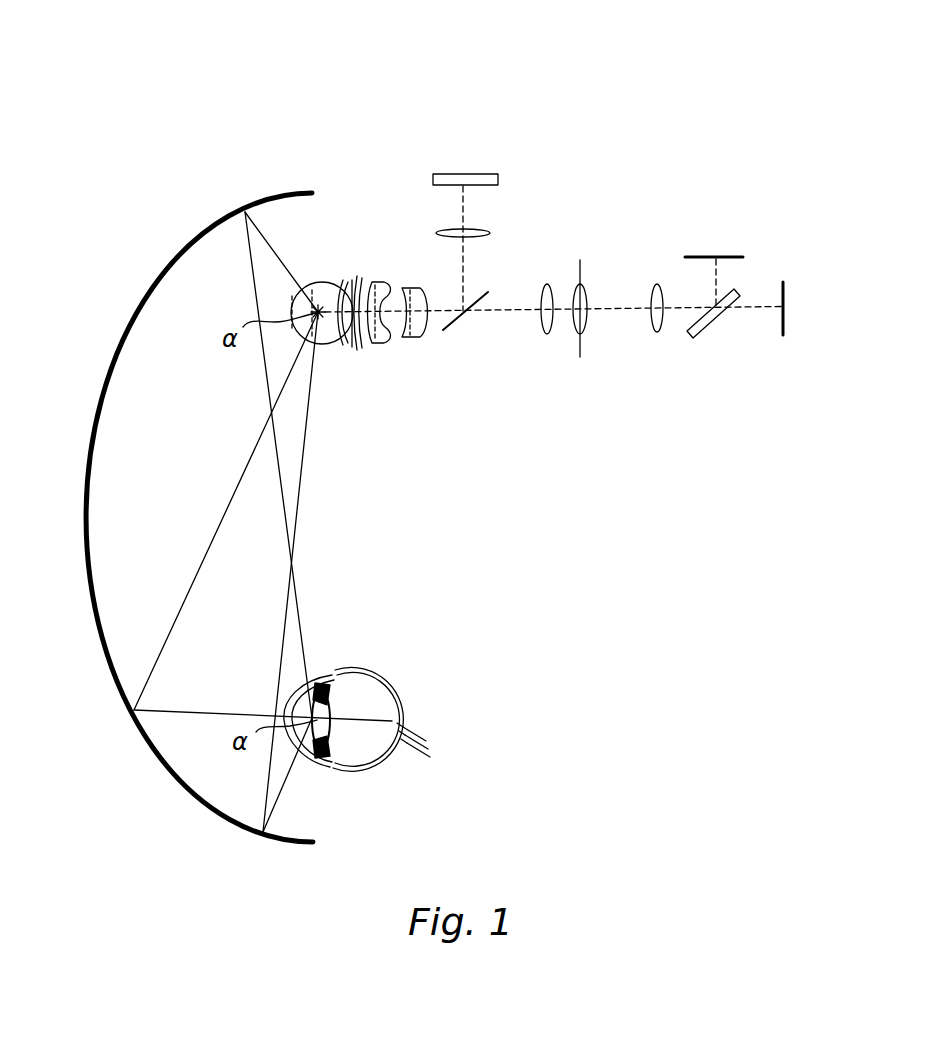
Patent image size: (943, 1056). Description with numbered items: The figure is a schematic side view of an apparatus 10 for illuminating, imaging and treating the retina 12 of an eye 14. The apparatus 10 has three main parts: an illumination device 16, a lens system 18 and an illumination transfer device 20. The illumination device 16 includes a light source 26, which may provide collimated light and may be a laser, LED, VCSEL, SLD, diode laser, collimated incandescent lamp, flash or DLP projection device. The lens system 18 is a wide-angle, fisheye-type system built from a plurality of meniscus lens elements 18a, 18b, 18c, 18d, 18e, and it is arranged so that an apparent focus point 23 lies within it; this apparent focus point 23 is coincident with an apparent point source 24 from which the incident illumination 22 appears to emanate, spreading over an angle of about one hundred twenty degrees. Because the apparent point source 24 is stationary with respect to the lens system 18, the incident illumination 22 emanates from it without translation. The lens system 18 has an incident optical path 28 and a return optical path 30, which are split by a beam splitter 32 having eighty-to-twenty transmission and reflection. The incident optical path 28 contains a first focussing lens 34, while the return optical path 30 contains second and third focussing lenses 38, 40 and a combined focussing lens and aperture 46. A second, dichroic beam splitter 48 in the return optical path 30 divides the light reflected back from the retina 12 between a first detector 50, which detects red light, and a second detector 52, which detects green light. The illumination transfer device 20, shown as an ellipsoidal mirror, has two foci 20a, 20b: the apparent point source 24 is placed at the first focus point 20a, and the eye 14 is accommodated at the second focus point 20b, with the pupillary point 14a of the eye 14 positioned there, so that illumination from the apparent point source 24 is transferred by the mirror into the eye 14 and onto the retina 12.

The apparatus 10 is at (98, 103).
The retina 12 is at (383, 680).
The eye 14 is at (422, 738).
The pupillary point 14a is at (328, 728).
The illumination device 16 is at (433, 178).
The lens system 18 is at (340, 192).
The meniscus lens element 18a is at (326, 280).
The meniscus lens element 18b is at (349, 338).
The meniscus lens element 18c is at (358, 288).
The meniscus lens element 18d is at (390, 336).
The meniscus lens element 18e is at (417, 292).
The illumination transfer device 20 is at (92, 455).
The first focus point 20a is at (316, 312).
The second focus point 20b is at (318, 720).
The incident illumination 22 is at (268, 382).
The apparent focus point 23 is at (317, 320).
The apparent point source 24 is at (316, 309).
The light source 26 is at (484, 174).
The incident optical path 28 is at (462, 212).
The return optical path 30 is at (505, 311).
The beam splitter 32 is at (467, 330).
The first focussing lens 34 is at (482, 233).
The second focussing lens 38 is at (546, 286).
The third focussing lens 40 is at (654, 320).
The combined focussing lens and aperture 46 is at (583, 274).
The second (dichroic) beam splitter 48 is at (703, 327).
The first detector 50 is at (725, 256).
The second detector 52 is at (785, 292).